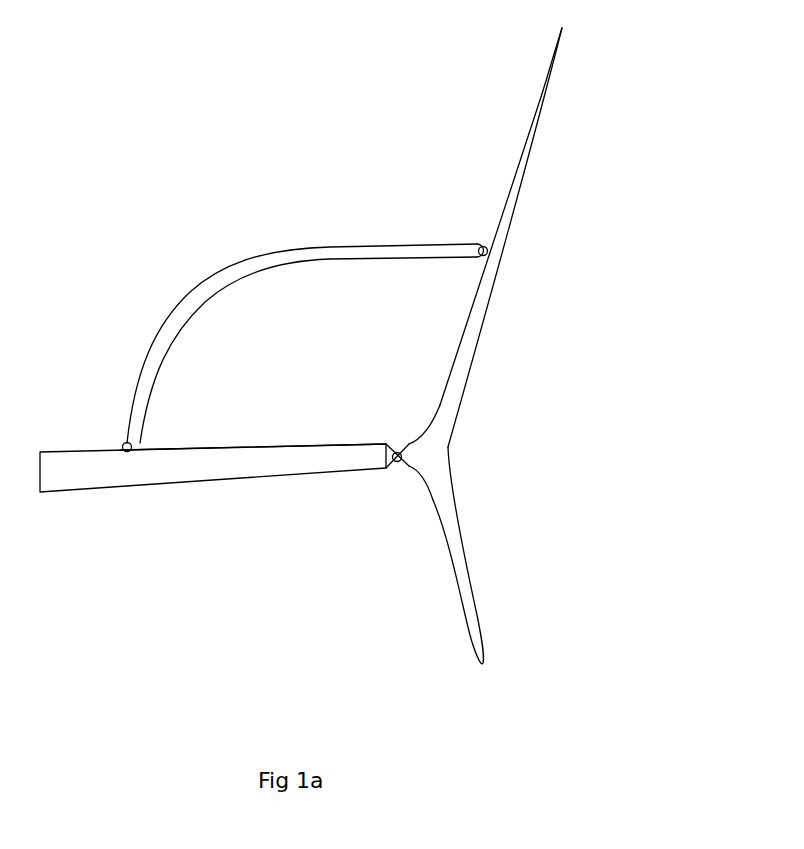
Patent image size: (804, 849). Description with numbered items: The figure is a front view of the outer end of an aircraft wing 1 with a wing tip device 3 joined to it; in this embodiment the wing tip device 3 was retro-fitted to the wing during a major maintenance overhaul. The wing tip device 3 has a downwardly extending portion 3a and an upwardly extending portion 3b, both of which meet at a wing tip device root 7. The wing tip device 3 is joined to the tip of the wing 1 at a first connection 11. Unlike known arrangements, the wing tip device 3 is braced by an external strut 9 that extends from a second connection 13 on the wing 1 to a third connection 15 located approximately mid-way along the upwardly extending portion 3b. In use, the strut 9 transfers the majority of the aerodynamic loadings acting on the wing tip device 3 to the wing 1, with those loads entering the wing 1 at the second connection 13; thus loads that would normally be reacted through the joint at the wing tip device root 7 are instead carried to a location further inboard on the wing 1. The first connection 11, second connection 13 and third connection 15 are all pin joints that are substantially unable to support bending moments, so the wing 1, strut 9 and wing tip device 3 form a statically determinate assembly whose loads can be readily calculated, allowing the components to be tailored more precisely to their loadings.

The wing 1 is at (190, 522).
The wing tip device 3 is at (541, 380).
The downwardly extending portion 3a is at (478, 603).
The upwardly extending portion 3b is at (530, 163).
The wing tip device root 7 is at (422, 459).
The external strut 9 is at (183, 297).
The first connection 11 is at (378, 417).
The second connection 13 is at (122, 443).
The third connection 15 is at (478, 247).